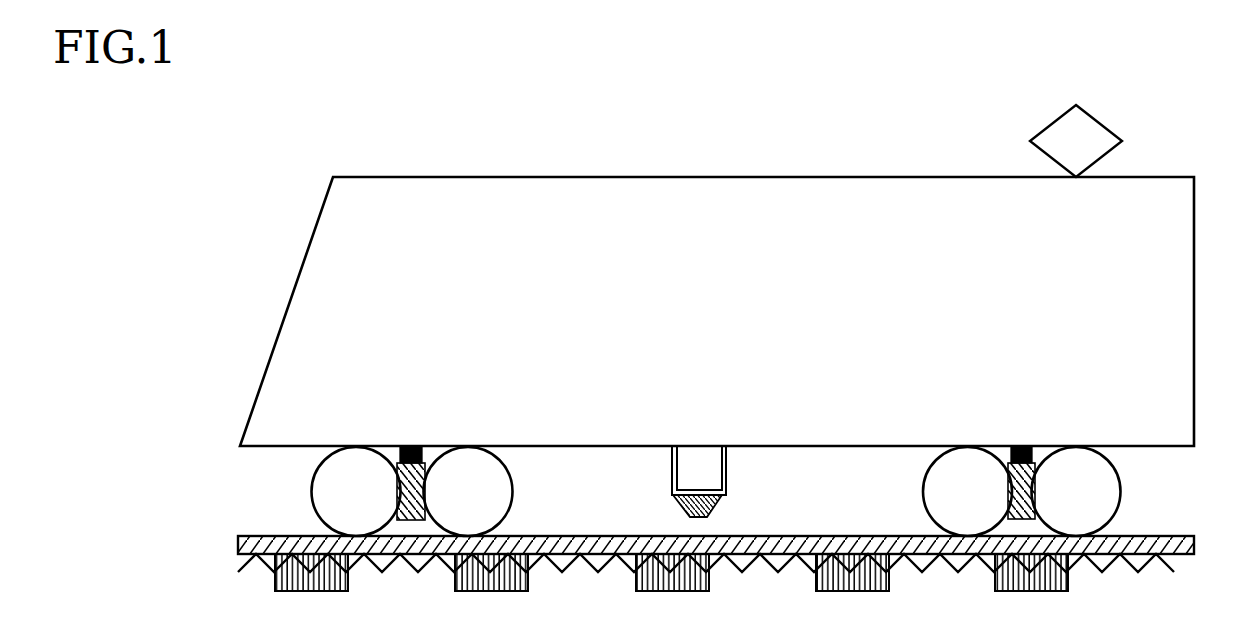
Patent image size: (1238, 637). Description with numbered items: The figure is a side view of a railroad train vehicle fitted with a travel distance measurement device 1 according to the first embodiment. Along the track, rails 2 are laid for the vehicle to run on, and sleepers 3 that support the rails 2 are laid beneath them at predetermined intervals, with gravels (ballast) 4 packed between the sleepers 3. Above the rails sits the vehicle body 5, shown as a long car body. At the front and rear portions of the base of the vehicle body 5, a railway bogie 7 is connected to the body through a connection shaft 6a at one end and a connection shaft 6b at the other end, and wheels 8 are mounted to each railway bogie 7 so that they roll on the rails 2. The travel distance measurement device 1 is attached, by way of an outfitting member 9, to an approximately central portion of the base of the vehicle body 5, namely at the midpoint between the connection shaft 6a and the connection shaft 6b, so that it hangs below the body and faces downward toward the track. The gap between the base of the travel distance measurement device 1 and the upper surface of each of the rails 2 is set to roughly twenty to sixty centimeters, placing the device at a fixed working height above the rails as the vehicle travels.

The travel distance measurement device 1 is at (710, 506).
The rails 2 is at (256, 535).
The sleepers 3 is at (492, 592).
The gravels (ballast) 4 is at (385, 573).
The vehicle body 5 is at (469, 176).
The connection shaft 6a is at (412, 446).
The connection shaft 6b is at (1023, 446).
The railway bogie 7 is at (434, 452).
The wheels 8 is at (354, 458).
The outfitting member 9 is at (727, 472).